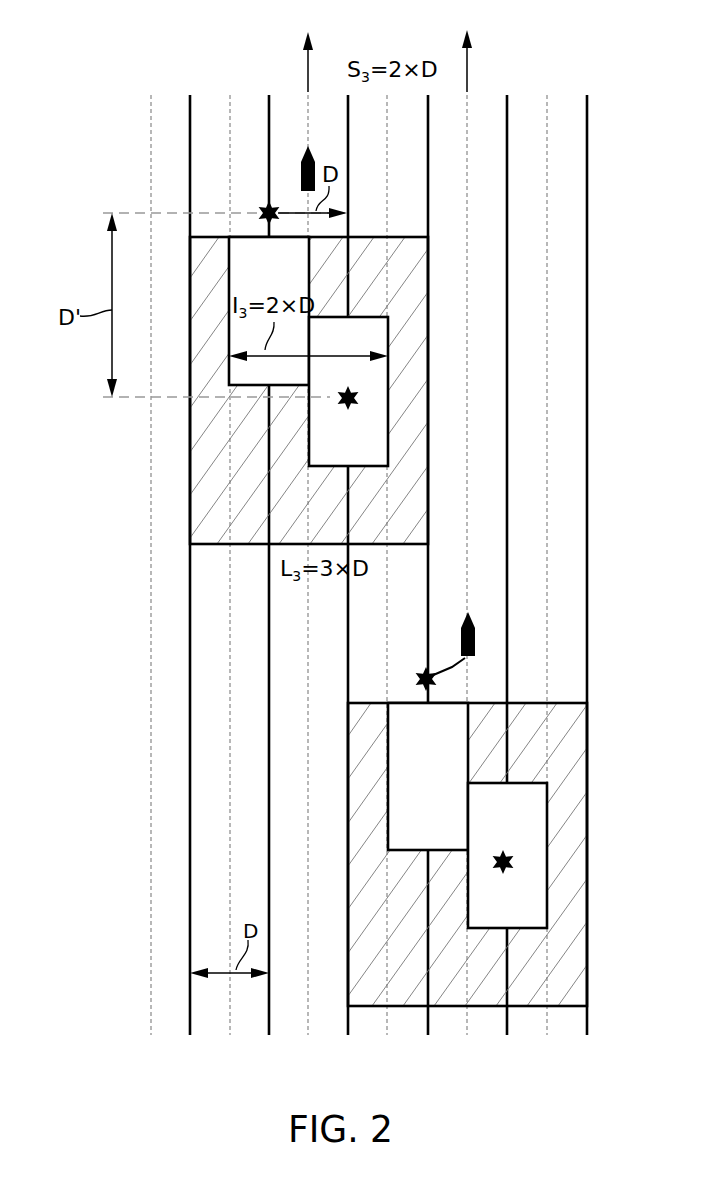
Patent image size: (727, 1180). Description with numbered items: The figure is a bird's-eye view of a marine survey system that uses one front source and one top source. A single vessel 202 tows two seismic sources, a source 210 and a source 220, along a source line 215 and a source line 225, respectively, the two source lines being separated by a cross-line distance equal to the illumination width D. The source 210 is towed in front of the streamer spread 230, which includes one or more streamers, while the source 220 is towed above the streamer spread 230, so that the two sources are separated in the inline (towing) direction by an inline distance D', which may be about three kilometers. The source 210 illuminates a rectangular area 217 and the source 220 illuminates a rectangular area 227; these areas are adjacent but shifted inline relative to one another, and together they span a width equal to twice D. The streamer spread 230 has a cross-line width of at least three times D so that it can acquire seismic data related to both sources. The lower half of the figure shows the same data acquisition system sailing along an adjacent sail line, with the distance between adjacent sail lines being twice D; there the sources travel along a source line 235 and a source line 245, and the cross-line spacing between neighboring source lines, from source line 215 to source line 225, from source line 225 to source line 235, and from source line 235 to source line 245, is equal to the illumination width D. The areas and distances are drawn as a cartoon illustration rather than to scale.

The vessel 202 is at (307, 148).
The source 210 is at (266, 202).
The source line 215 is at (269, 1020).
The rectangular area 217 is at (245, 252).
The source 220 is at (362, 396).
The source line 225 is at (348, 1020).
The rectangular area 227 is at (357, 448).
The streamer spread 230 is at (245, 465).
The source line 235 is at (428, 1020).
The source line 245 is at (507, 1020).